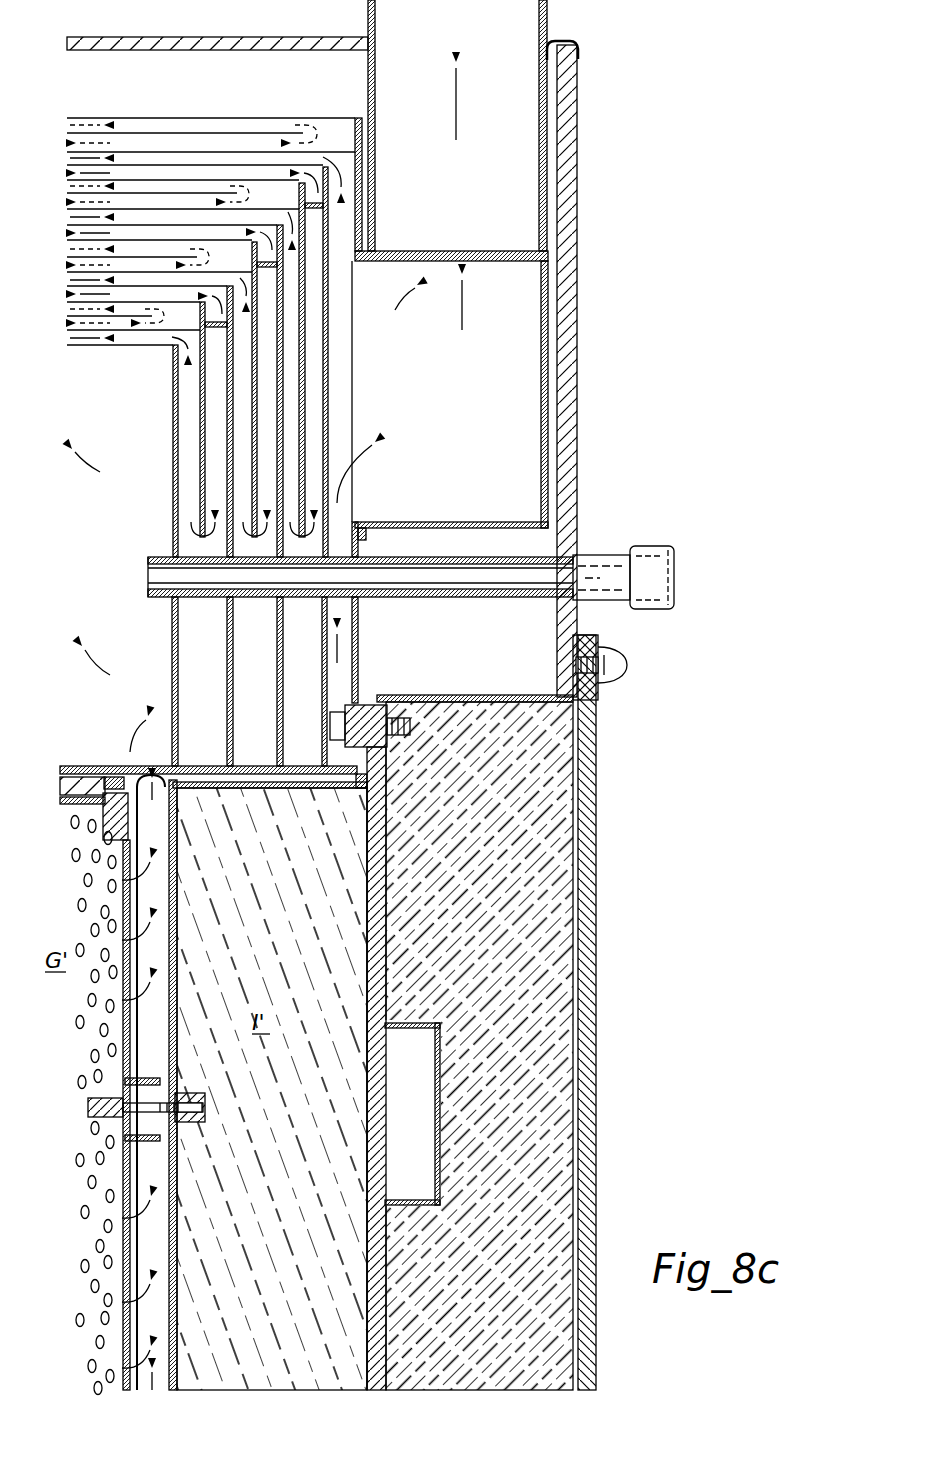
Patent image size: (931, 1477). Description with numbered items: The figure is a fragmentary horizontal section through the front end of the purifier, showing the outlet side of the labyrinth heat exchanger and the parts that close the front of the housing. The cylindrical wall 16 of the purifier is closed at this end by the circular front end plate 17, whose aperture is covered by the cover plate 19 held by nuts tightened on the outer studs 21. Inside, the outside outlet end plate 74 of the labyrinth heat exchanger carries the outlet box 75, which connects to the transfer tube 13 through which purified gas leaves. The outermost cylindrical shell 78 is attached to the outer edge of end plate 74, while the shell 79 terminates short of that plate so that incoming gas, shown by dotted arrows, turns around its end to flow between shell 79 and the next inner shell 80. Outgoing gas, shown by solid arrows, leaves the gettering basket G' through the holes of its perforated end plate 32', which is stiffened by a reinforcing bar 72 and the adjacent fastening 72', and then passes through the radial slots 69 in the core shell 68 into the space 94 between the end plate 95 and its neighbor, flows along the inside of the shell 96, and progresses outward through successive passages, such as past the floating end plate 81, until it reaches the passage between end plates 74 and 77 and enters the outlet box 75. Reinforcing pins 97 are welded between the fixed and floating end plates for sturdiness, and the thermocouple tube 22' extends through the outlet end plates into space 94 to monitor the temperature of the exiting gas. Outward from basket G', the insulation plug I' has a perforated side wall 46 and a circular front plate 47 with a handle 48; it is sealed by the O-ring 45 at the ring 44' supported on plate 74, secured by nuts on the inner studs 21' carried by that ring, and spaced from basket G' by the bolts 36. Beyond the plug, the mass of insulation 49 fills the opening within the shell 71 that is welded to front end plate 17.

The cylindrical wall 16 is at (334, 37).
The transfer tube 13 is at (540, 90).
The front end plate 17 is at (577, 465).
The outlet box 75 is at (476, 522).
The outlet end plate 77 is at (337, 400).
The floating end plate 81 is at (330, 503).
The outside outlet end plate 74 is at (362, 165).
The cylindrical shell 78 is at (231, 118).
The cylindrical shell 79 is at (300, 102).
The cylindrical shell 80 is at (152, 150).
The shell 96 is at (125, 347).
The end plate 95 is at (173, 440).
The reinforcing pins 97 is at (356, 216).
The space 94 is at (138, 534).
The thermocouple tube 22' is at (411, 553).
The studs 21 is at (622, 663).
The shell 71 is at (475, 697).
The cover plate 19 is at (597, 1000).
The insulation 49 is at (550, 903).
The handle 48 is at (415, 1130).
The inner studs 21' is at (391, 700).
The O-ring 45 is at (362, 810).
The front plate 47 is at (362, 1143).
The shell 68 is at (107, 766).
The corner seal 44' is at (339, 805).
The perforated side wall 46 is at (300, 788).
The insulation plug I' is at (272, 1089).
The radial slots 69 is at (158, 836).
The perforated end plate 32' is at (86, 1115).
The gettering basket G' is at (94, 1105).
The reinforcing bars 72 is at (129, 1091).
The nut 72' is at (208, 1084).
The bolts 36 is at (130, 1125).